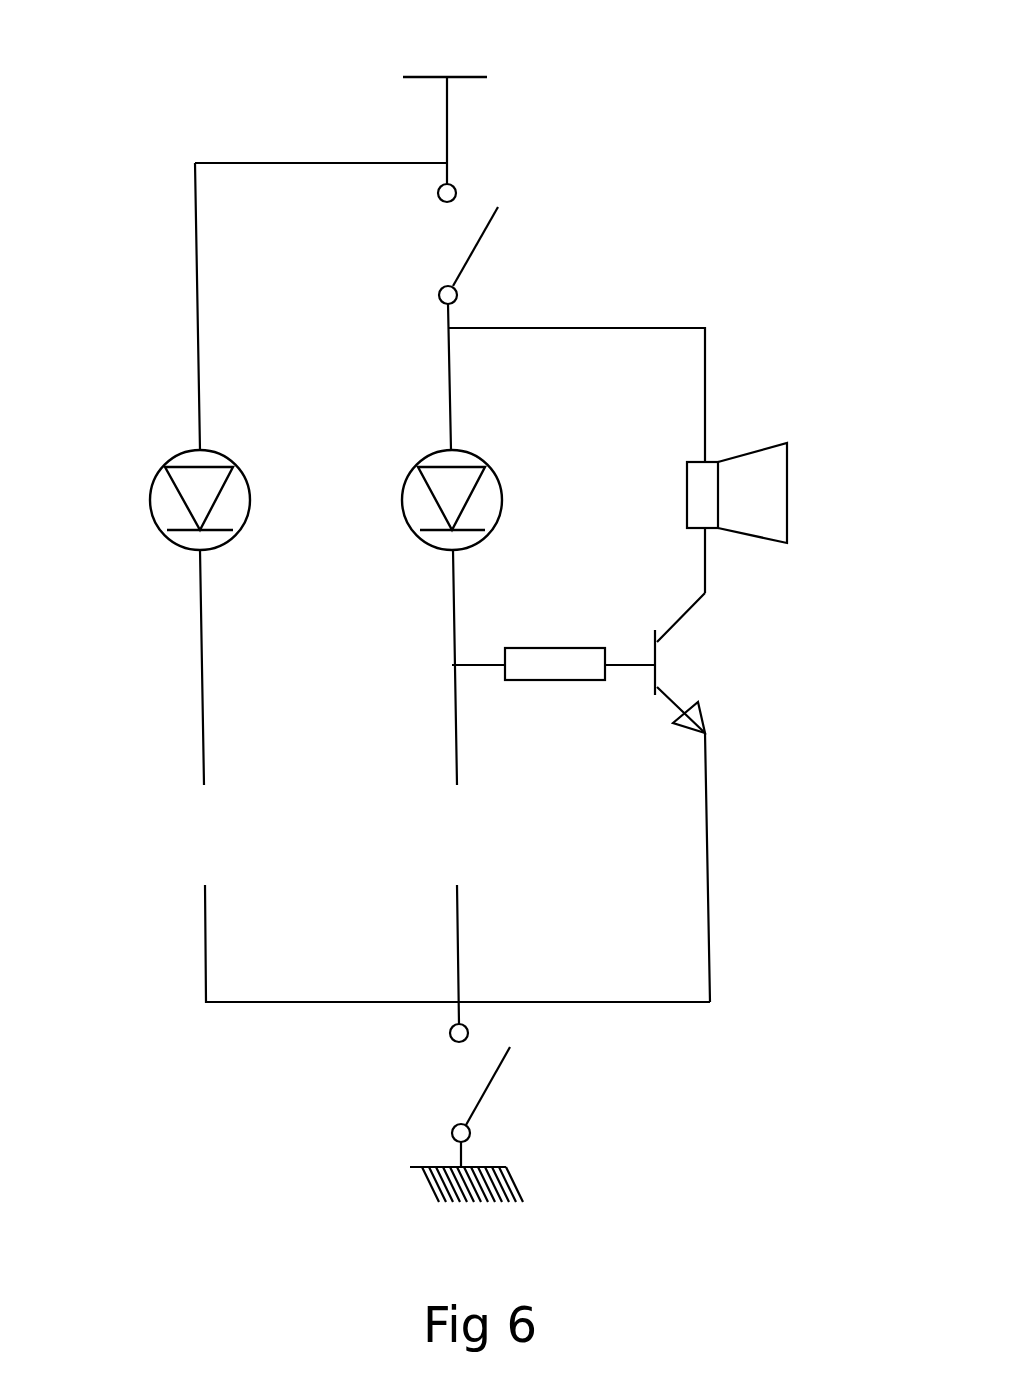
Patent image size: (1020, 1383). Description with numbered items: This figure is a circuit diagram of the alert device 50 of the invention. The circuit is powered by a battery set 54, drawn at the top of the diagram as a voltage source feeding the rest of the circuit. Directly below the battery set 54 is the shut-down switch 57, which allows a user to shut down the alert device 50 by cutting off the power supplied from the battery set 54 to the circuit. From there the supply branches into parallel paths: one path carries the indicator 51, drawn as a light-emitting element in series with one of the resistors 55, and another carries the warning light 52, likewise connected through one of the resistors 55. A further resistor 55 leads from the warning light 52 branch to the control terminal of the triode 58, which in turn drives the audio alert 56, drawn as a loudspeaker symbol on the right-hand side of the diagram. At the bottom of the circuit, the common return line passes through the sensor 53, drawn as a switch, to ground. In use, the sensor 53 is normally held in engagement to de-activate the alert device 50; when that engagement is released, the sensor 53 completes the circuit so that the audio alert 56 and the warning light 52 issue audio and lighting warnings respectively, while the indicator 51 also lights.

The alert device 50 is at (738, 187).
The indicator 51 is at (155, 510).
The warning light 52 is at (413, 520).
The sensor 53 is at (483, 1095).
The battery set 54 is at (470, 73).
The resistors 55 is at (558, 676).
The audio alert 56 is at (782, 523).
The shut-down switch 57 is at (475, 255).
The triode 58 is at (675, 697).